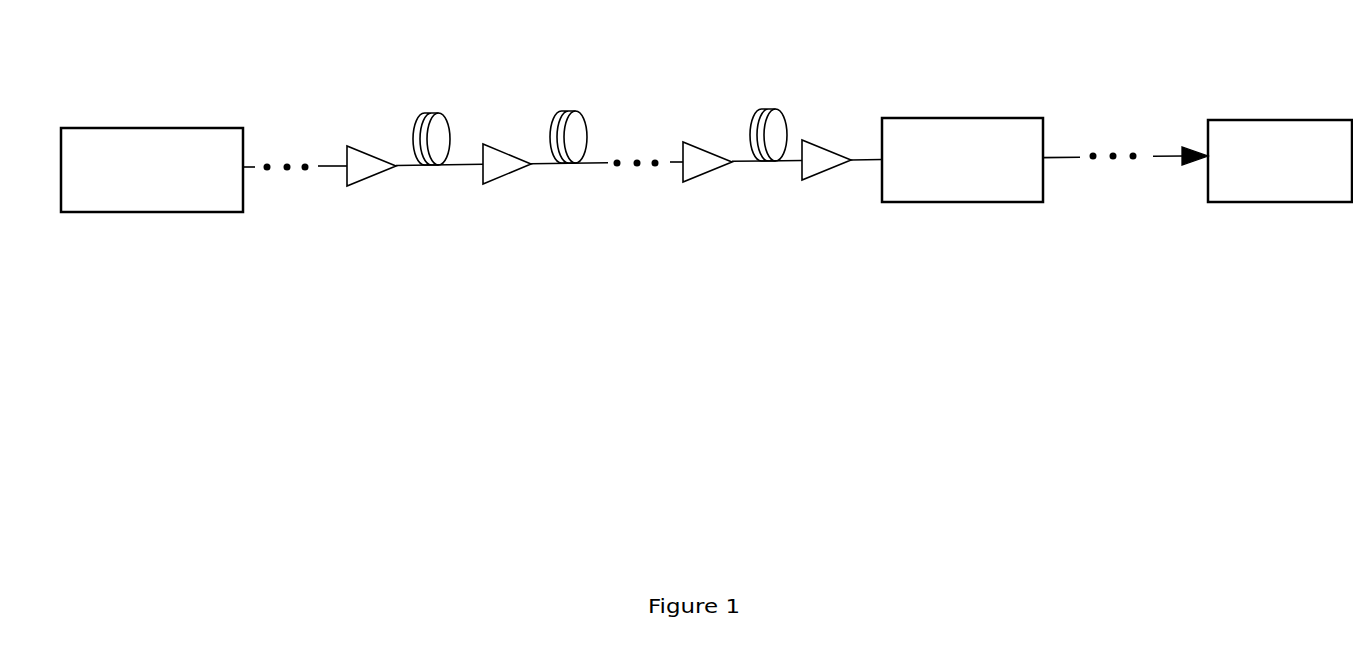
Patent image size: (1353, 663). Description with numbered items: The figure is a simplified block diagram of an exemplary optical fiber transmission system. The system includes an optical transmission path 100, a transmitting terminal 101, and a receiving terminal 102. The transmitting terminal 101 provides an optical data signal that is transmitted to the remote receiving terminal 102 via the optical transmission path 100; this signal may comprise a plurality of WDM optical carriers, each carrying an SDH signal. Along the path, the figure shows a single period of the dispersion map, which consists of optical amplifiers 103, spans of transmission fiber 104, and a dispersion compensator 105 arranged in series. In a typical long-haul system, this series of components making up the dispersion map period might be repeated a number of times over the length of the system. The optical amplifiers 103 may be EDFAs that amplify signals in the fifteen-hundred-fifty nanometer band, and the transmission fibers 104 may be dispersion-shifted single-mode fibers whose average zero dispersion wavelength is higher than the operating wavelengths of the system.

The optical transmission path 100 is at (330, 167).
The transmitting terminal 101 is at (158, 128).
The receiving terminal 102 is at (1285, 120).
The optical amplifiers 103 is at (373, 177).
The spans of transmission fiber 104 is at (427, 112).
The dispersion compensator 105 is at (958, 118).